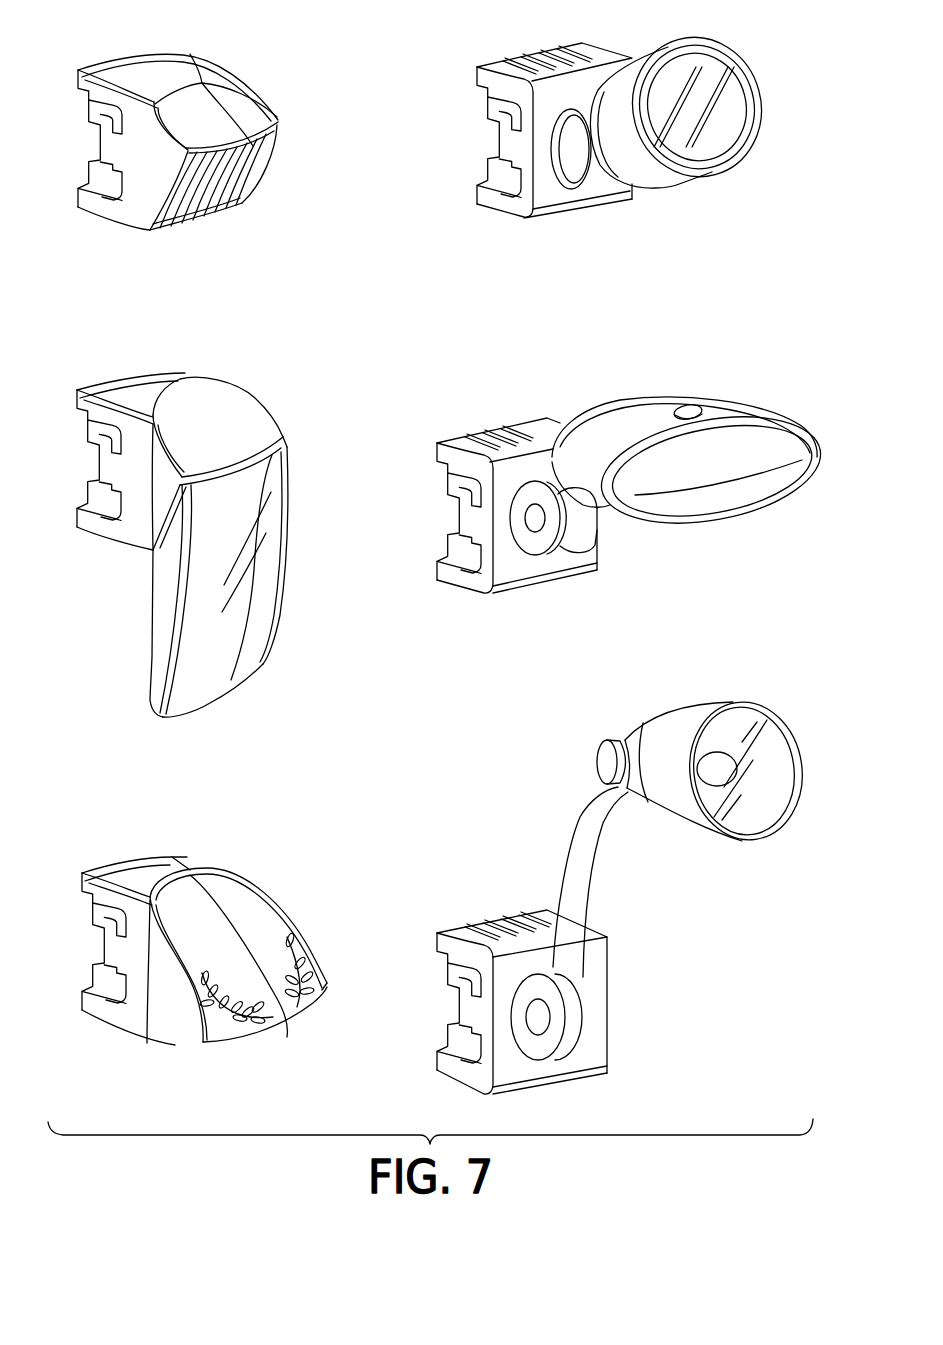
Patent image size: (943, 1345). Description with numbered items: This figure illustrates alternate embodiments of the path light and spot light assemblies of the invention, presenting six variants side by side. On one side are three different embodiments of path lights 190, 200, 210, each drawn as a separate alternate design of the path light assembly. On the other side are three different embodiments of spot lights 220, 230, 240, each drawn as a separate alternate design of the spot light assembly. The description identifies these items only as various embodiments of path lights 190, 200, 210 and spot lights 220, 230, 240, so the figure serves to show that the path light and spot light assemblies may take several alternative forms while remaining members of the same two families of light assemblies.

The path light 190 is at (198, 70).
The path light 200 is at (210, 400).
The path light 210 is at (235, 893).
The spot light 220 is at (520, 65).
The spot light 230 is at (498, 435).
The spot light 240 is at (498, 927).